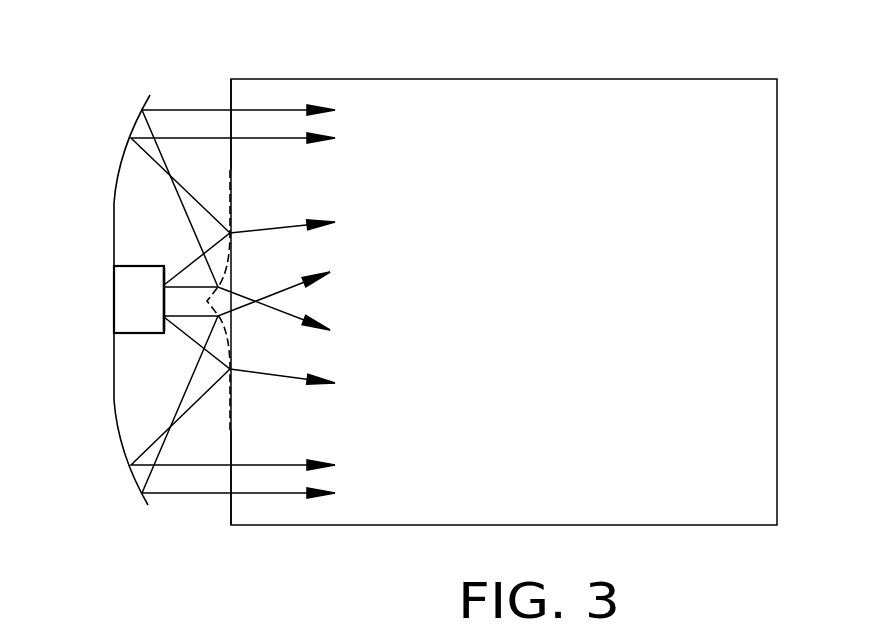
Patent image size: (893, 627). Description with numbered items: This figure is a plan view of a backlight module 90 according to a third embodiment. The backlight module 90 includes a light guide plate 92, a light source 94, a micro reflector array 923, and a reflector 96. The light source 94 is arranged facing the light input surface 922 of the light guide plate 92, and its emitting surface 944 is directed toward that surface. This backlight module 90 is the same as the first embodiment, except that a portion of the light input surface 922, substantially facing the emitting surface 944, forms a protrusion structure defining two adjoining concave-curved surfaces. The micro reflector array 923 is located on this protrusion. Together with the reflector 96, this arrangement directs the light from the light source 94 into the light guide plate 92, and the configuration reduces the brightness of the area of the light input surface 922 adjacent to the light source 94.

The backlight module 90 is at (415, 42).
The light guide plate 92 is at (582, 54).
The light input surface 922 is at (212, 83).
The micro reflector array 923 is at (214, 395).
The light source 94 is at (130, 316).
The emitting surface 944 is at (178, 346).
The reflector 96 is at (113, 241).